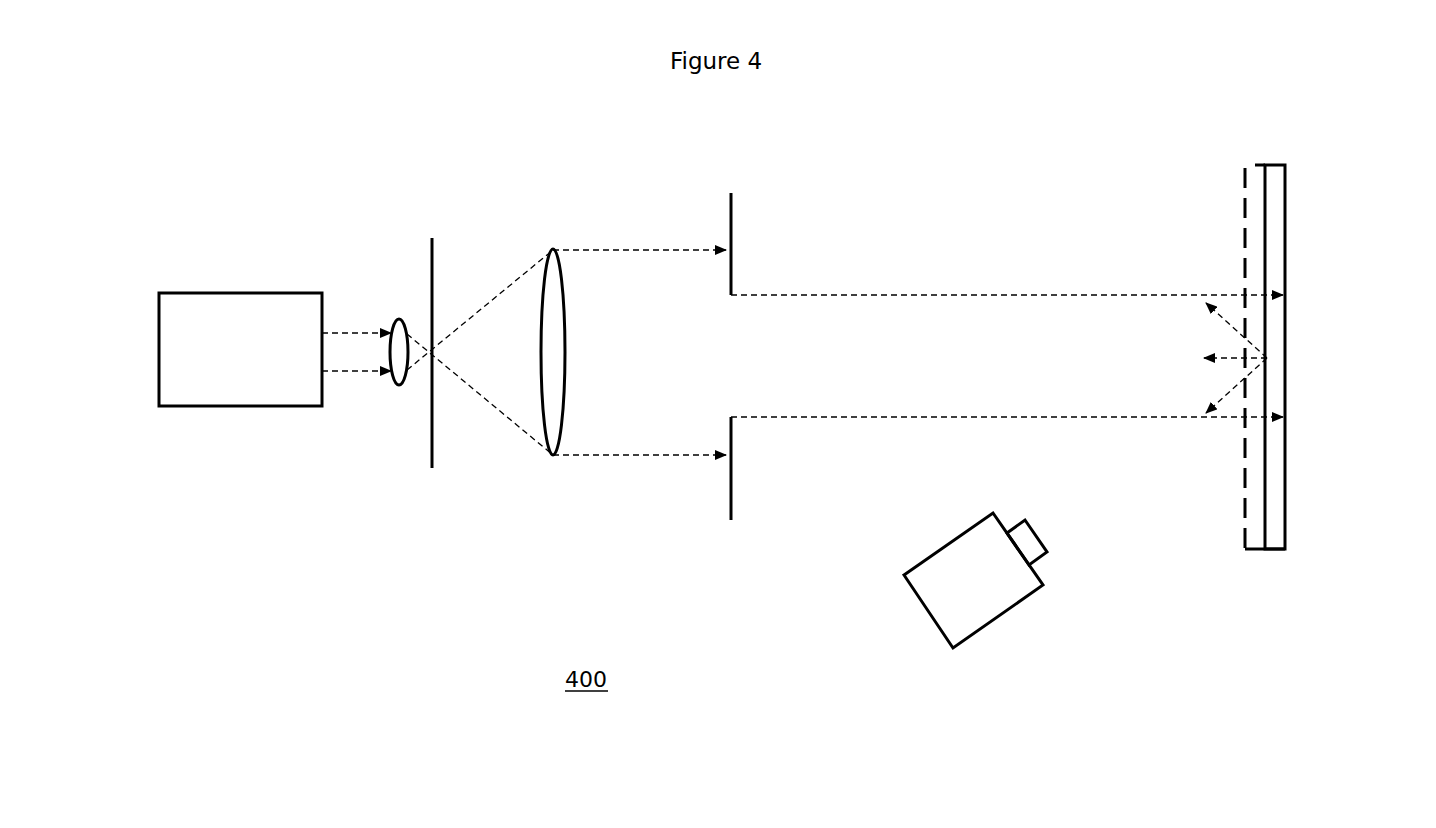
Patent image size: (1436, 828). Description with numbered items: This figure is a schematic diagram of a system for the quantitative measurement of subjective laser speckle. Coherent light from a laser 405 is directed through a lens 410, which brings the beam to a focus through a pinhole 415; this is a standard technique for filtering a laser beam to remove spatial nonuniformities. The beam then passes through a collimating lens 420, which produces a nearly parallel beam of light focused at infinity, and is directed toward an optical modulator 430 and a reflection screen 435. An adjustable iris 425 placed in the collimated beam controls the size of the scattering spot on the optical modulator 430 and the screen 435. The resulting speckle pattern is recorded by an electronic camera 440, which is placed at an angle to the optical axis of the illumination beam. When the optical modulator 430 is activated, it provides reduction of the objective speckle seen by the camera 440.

The laser 405 is at (204, 414).
The lens 410 is at (399, 316).
The pinhole 415 is at (437, 273).
The collimating lens 420 is at (552, 462).
The adjustable iris 425 is at (736, 220).
The optical modulator 430 is at (1245, 560).
The reflection screen 435 is at (1291, 228).
The electronic camera 440 is at (916, 608).